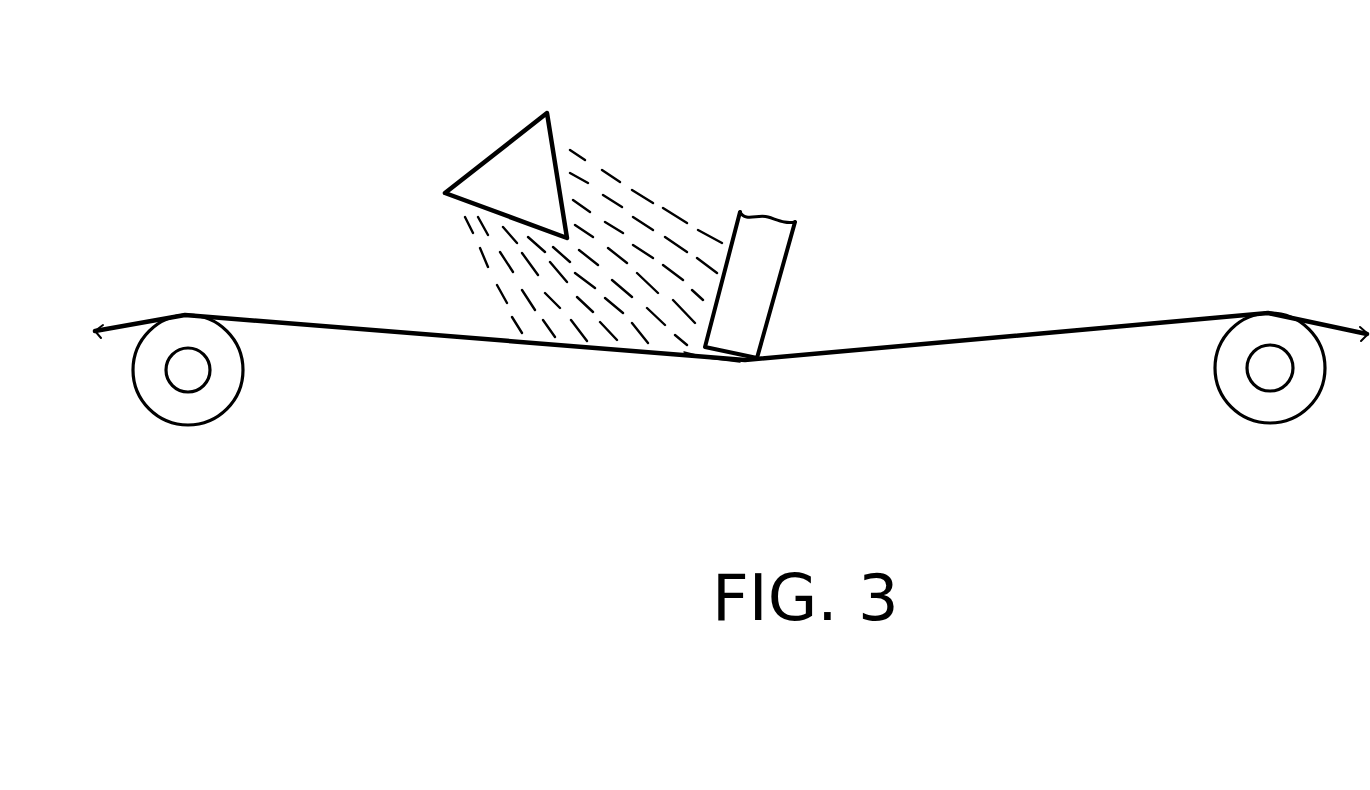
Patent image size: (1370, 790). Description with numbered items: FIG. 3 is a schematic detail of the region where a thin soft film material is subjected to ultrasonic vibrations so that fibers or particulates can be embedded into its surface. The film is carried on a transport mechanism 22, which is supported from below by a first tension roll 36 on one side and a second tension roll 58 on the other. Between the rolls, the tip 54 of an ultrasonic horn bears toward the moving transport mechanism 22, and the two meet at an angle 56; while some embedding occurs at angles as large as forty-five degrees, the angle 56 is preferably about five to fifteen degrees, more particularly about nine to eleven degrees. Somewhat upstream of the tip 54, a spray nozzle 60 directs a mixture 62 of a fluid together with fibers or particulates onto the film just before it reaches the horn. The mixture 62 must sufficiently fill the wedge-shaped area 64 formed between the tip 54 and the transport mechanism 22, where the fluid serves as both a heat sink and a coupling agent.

The transport mechanism 22 is at (253, 317).
The first tension roll 36 is at (237, 392).
The tip of the ultrasonic horn 54 is at (787, 260).
The angle 56 is at (692, 358).
The second tension roll 58 is at (1325, 365).
The spray nozzle 60 is at (553, 122).
The mixture of a fluid and fibers or particulates 62 is at (640, 193).
The wedge-shaped area 64 is at (718, 365).